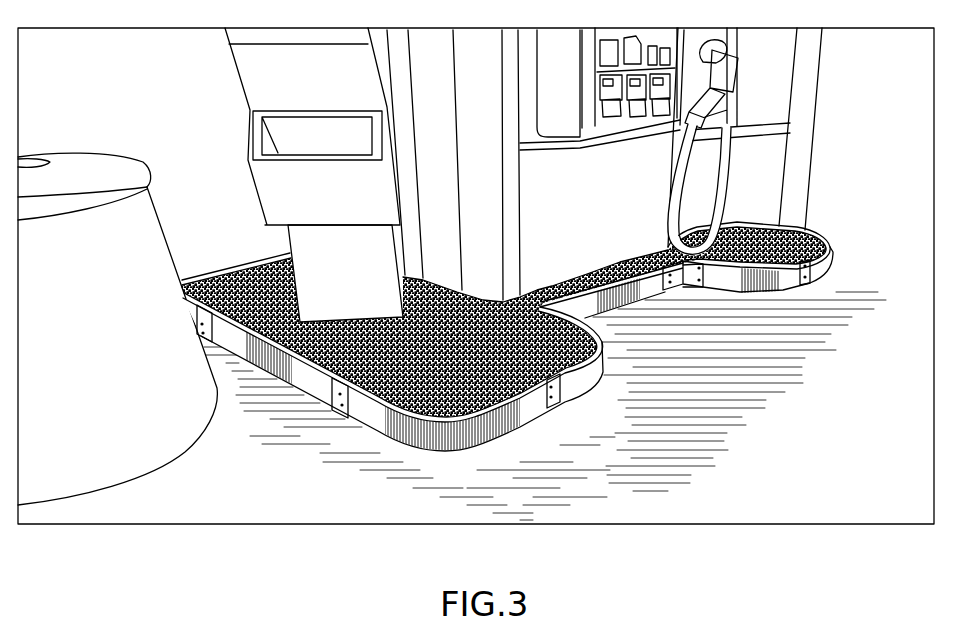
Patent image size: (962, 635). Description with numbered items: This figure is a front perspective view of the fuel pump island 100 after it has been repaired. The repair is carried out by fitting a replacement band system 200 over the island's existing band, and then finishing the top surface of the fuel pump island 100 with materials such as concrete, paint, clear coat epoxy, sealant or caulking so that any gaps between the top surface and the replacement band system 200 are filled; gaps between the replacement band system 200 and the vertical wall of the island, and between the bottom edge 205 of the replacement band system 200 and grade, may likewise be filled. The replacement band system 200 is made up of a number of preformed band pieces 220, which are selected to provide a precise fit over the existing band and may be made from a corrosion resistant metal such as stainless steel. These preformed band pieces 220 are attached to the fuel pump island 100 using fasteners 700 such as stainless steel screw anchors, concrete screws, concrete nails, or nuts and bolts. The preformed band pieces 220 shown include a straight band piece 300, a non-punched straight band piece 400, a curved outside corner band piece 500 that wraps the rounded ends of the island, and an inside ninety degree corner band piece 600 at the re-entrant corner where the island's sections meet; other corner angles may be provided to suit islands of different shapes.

The fuel pump island 100 is at (333, 338).
The replacement band system 200 is at (378, 410).
The bottom edge 205 is at (513, 432).
The preformed band pieces 220 is at (430, 430).
The straight band piece 300 is at (627, 298).
The non-punched straight band piece 400 is at (240, 347).
The curved outside corner band piece 500 is at (460, 432).
The inside 90 degree corner band piece 600 is at (693, 287).
The fasteners 700 is at (553, 398).